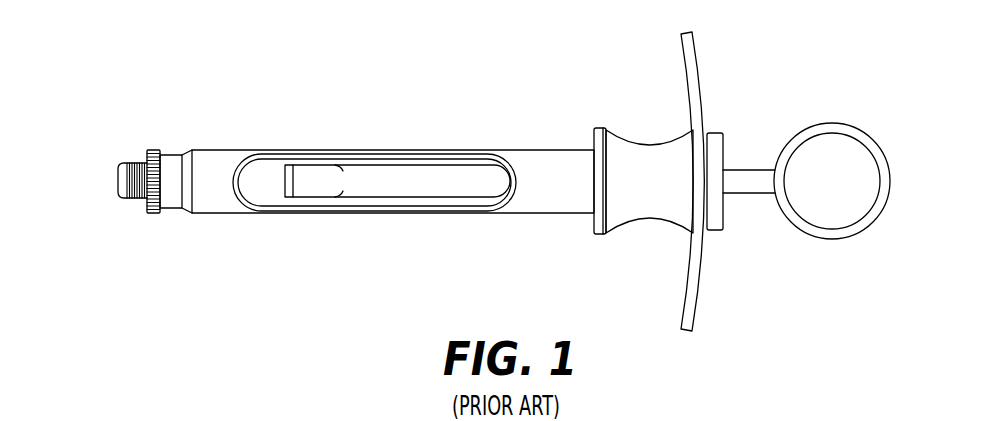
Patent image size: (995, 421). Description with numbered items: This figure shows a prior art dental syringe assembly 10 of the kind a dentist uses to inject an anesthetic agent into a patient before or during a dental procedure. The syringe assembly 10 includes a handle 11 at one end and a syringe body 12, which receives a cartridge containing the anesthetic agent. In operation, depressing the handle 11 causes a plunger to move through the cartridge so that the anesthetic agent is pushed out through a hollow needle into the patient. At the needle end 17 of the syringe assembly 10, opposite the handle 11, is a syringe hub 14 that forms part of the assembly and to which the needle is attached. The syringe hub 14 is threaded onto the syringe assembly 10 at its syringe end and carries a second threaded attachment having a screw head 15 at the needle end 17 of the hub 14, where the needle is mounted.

The syringe assembly 10 is at (435, 63).
The handle 11 is at (738, 83).
The syringe body 12 is at (257, 150).
The syringe hub 14 is at (155, 216).
The screw head 15 is at (133, 166).
The needle end 17 is at (113, 207).